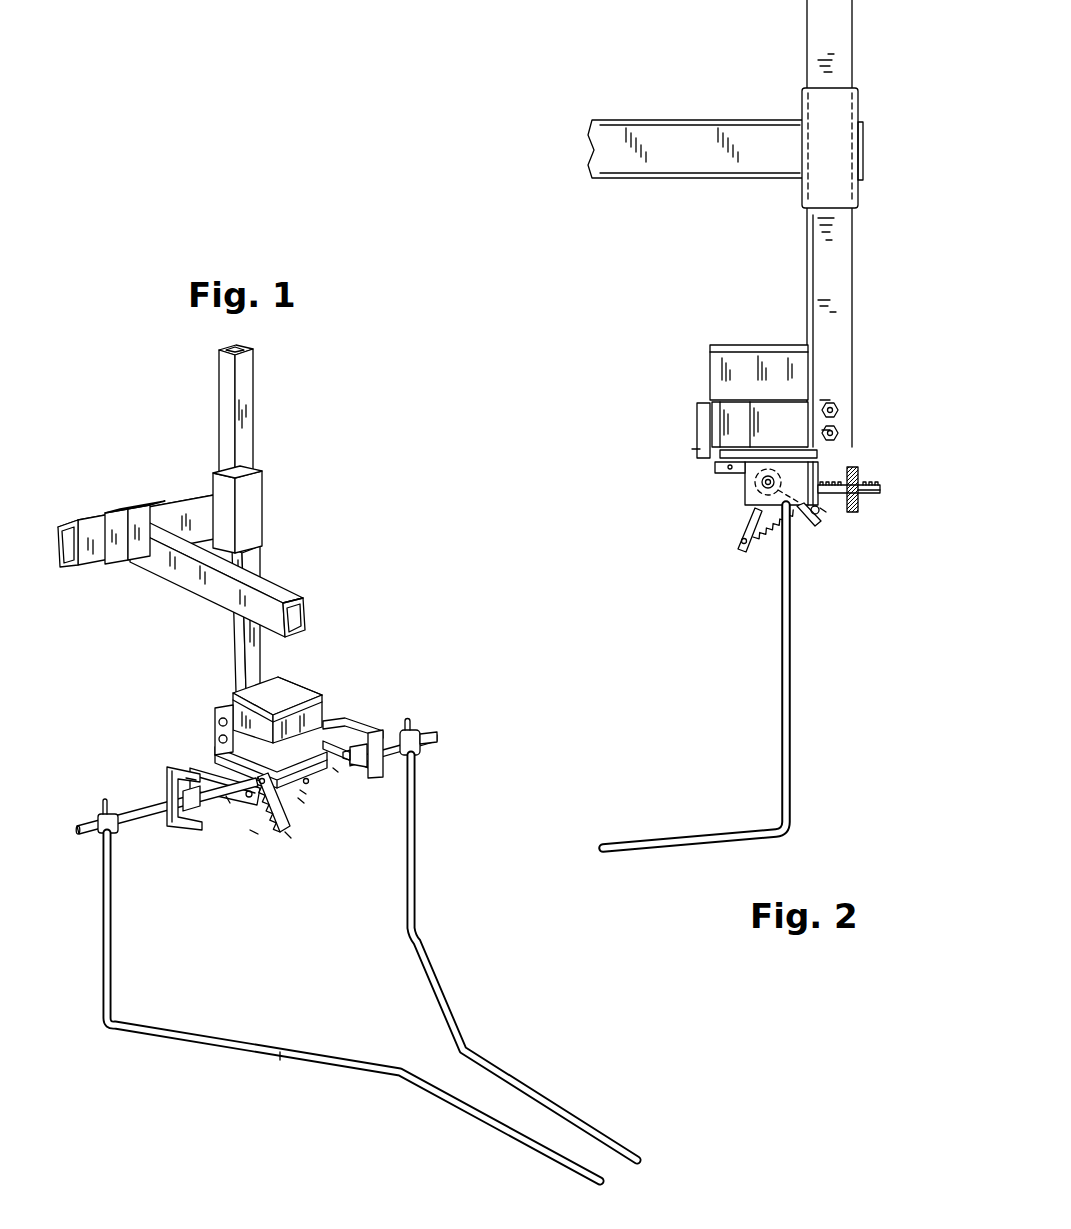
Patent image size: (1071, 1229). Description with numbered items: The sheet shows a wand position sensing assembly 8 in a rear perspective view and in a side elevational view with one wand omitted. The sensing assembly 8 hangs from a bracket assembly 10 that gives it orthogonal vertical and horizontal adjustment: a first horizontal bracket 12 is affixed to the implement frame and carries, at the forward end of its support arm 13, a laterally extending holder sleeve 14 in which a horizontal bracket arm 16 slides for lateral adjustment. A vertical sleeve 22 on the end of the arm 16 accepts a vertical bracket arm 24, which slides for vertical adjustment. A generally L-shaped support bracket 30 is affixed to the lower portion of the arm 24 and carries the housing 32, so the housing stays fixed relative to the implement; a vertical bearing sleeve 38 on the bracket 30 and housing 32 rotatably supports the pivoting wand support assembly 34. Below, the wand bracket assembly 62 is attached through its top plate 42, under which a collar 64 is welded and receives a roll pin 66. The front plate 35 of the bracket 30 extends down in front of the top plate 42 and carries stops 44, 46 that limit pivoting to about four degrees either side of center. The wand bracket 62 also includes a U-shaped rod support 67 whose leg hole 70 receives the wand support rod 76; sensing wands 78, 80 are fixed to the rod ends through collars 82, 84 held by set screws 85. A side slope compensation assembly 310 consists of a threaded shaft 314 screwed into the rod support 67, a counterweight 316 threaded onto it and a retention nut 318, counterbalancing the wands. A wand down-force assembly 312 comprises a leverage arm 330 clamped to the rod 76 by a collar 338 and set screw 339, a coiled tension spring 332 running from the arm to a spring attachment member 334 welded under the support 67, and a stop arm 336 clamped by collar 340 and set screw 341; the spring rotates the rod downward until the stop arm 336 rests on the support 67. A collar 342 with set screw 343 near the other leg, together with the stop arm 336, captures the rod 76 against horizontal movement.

In FIG. 1, the wand position sensing assembly 8 is at (194, 671).
In FIG. 2, the wand position sensing assembly 8 is at (577, 224).
In FIG. 1, the bracket assembly 10 is at (300, 490).
In FIG. 1, the first horizontal bracket 12 is at (274, 575).
In FIG. 1, the support arm 13 is at (290, 594).
In FIG. 1, the holder sleeve 14 is at (140, 505).
In FIG. 1, the horizontal bracket arm 16 is at (83, 524).
In FIG. 2, the horizontal bracket arm 16 is at (695, 149).
In FIG. 1, the vertical sleeve 22 is at (213, 480).
In FIG. 2, the vertical sleeve 22 is at (832, 148).
In FIG. 1, the vertical bracket arm 24 is at (256, 407).
In FIG. 2, the vertical bracket arm 24 is at (840, 279).
In FIG. 1, the support bracket 30 is at (216, 706).
In FIG. 2, the support bracket 30 is at (693, 427).
In FIG. 1, the housing 32 is at (322, 658).
In FIG. 2, the housing 32 is at (717, 370).
In FIG. 1, the wand support assembly 34 is at (202, 705).
In FIG. 2, the wand support assembly 34 is at (643, 458).
In FIG. 1, the front plate 35 is at (302, 792).
In FIG. 2, the front plate 35 is at (695, 408).
In FIG. 2, the vertical bearing sleeve 38 is at (730, 410).
In FIG. 2, the top plate 42 is at (790, 450).
In FIG. 1, the stop 44 is at (300, 800).
In FIG. 1, the stop 46 is at (306, 782).
In FIG. 2, the stop 46 is at (693, 450).
In FIG. 1, the wand bracket assembly 62 is at (159, 760).
In FIG. 2, the wand bracket assembly 62 is at (730, 552).
In FIG. 2, the collar 64 is at (712, 470).
In FIG. 2, the roll pin 66 is at (730, 473).
In FIG. 1, the U-shaped rod support 67 is at (294, 690).
In FIG. 2, the hole 70 is at (747, 490).
In FIG. 1, the wand support rod 76 is at (142, 793).
In FIG. 1, the sensing wand 78 is at (280, 1060).
In FIG. 1, the sensing wand 80 is at (452, 1022).
In FIG. 2, the sensing wand 80 is at (798, 752).
In FIG. 1, the collar 82 is at (99, 814).
In FIG. 1, the collar 84 is at (416, 730).
In FIG. 1, the set screw 85 is at (420, 757).
In FIG. 2, the side slope compensation assembly 310 is at (840, 553).
In FIG. 1, the wand down-force assembly 312 is at (248, 874).
In FIG. 2, the threaded shaft 314 is at (832, 485).
In FIG. 2, the counterweight 316 is at (858, 470).
In FIG. 2, the retention nut 318 is at (862, 497).
In FIG. 1, the leverage arm 330 is at (272, 782).
In FIG. 1, the coiled tension spring 332 is at (288, 836).
In FIG. 2, the coiled tension spring 332 is at (763, 540).
In FIG. 1, the spring attachment member 334 is at (254, 833).
In FIG. 2, the spring attachment member 334 is at (822, 515).
In FIG. 1, the stop arm 336 is at (335, 770).
In FIG. 2, the stop arm 336 is at (823, 510).
In FIG. 1, the collar 338 is at (193, 777).
In FIG. 1, the set screw 339 is at (288, 790).
In FIG. 1, the collar 340 is at (373, 731).
In FIG. 1, the set screw 341 is at (340, 719).
In FIG. 1, the collar 342 is at (228, 800).
In FIG. 1, the set screw 343 is at (187, 767).